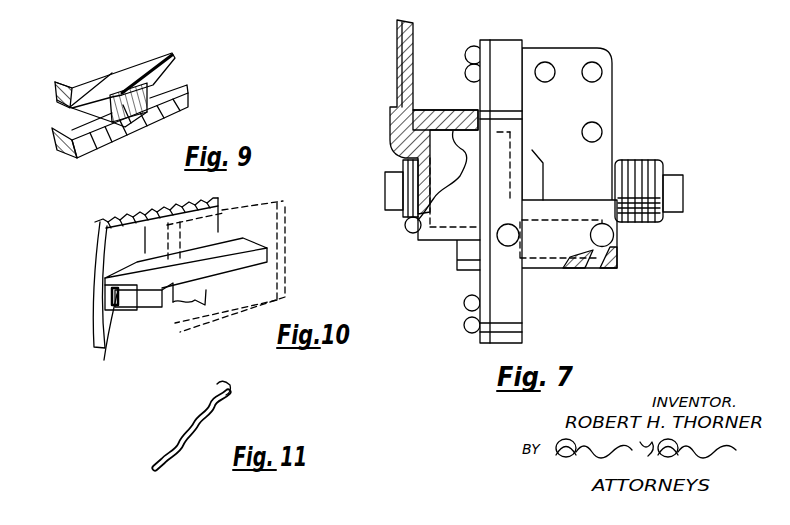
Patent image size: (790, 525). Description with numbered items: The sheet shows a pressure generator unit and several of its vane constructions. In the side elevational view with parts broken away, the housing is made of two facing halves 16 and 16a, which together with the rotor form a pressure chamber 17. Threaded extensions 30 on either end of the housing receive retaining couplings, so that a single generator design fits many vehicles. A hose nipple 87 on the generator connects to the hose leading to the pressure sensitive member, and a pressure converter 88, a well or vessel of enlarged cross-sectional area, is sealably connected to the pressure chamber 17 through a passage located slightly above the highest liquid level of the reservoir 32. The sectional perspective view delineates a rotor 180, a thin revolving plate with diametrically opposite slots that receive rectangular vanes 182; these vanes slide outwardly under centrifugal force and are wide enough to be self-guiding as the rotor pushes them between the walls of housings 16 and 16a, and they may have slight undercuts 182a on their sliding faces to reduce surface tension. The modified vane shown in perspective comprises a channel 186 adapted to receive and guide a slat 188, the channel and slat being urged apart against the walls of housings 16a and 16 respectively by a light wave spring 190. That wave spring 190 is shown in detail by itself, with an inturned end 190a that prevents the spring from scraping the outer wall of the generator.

In FIG. 9, the housing half 16 is at (189, 97).
In FIG. 10, the housing half 16 is at (287, 210).
In FIG. 7, the housing half 16 is at (505, 40).
In FIG. 9, the housing half 16a is at (121, 79).
In FIG. 10, the housing half 16a is at (96, 240).
In FIG. 7, the housing half 16a is at (478, 90).
In FIG. 10, the pressure chamber 17 is at (128, 212).
In FIG. 7, the threaded extension 30 is at (400, 165).
In FIG. 7, the reservoir 32 is at (588, 258).
In FIG. 7, the hose nipple 87 is at (397, 67).
In FIG. 7, the pressure converter 88 is at (470, 116).
In FIG. 9, the rotor 180 is at (155, 82).
In FIG. 9, the vane 182 is at (128, 117).
In FIG. 9, the undercut 182a is at (103, 72).
In FIG. 10, the channel 186 is at (105, 297).
In FIG. 10, the slat 188 is at (145, 303).
In FIG. 10, the wave spring 190 is at (104, 360).
In FIG. 11, the wave spring 190 is at (224, 412).
In FIG. 11, the inturned end 190a is at (228, 386).